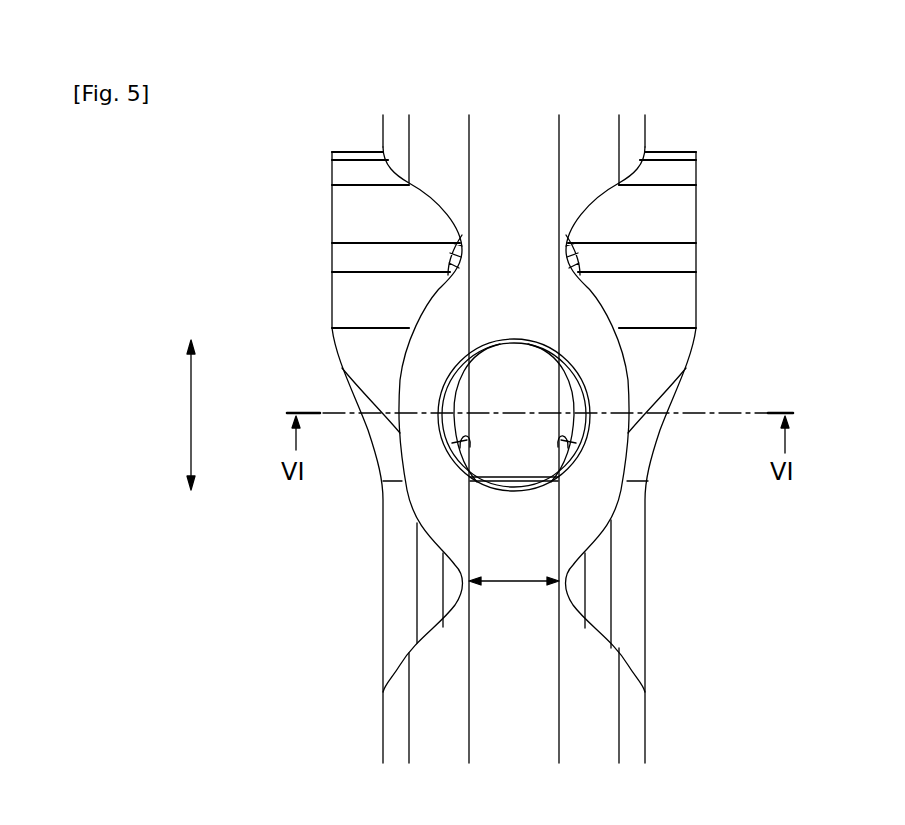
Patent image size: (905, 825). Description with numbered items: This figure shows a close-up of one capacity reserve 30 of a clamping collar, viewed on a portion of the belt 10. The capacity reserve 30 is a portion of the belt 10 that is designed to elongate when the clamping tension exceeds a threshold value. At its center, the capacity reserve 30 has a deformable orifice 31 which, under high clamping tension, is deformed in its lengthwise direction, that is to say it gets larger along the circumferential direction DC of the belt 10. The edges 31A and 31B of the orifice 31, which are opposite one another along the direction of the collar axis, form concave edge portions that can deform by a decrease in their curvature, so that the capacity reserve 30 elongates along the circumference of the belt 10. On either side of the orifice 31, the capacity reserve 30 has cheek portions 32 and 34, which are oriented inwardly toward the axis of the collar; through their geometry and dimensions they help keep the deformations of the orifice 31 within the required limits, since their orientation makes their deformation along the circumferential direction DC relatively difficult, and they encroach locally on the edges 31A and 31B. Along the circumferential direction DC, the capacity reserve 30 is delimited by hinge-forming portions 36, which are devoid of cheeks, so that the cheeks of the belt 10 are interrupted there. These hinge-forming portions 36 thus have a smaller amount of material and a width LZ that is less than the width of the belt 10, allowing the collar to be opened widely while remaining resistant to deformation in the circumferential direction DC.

The belt 10 is at (527, 722).
The capacity reserve 30 is at (440, 352).
The deformable orifice 31 is at (547, 350).
The edge of the orifice 31A is at (566, 467).
The edge of the orifice 31B is at (462, 467).
The cheek portion 32 is at (625, 402).
The cheek portion 34 is at (407, 452).
The hinge-forming portion 36 is at (460, 262).
The width of the hinge-forming portion LZ is at (513, 582).
The circumferential direction DC is at (173, 415).